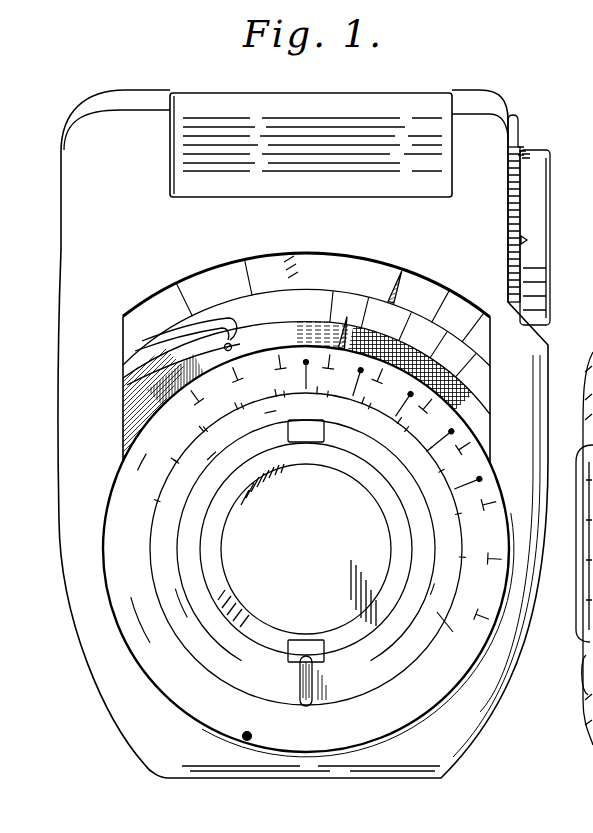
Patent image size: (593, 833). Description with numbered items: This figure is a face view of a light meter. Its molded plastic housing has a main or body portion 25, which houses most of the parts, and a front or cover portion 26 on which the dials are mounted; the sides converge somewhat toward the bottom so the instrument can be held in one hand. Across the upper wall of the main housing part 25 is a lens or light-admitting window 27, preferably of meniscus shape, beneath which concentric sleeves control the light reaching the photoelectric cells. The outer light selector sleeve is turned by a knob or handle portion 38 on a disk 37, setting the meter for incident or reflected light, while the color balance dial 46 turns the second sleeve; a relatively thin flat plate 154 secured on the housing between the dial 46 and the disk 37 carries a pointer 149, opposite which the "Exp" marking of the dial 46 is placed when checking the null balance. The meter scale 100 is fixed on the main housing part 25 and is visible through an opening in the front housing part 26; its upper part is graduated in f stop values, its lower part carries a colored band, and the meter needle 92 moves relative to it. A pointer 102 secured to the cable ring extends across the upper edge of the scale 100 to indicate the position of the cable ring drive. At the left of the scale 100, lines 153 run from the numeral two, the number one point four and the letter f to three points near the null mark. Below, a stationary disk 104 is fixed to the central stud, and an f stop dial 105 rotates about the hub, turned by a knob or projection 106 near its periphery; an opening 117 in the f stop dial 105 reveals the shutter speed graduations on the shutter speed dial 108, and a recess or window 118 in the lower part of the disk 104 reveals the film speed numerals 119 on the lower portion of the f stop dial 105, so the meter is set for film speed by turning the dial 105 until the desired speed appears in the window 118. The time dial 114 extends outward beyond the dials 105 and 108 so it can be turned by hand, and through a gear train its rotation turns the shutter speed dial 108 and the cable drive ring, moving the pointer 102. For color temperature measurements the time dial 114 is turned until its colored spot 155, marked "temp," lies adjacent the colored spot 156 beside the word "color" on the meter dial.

The main or body portion 25 is at (133, 92).
The front or cover portion 26 is at (93, 133).
The lens or light-admitting window 27 is at (270, 97).
The disk 37 is at (508, 181).
The knob or handle portion 38 is at (520, 115).
The dial 46 is at (539, 193).
The meter needle 92 is at (330, 322).
The meter scale 100 is at (123, 428).
The pointer 102 is at (393, 268).
The disk 104 is at (362, 530).
The f stop dial 105 is at (423, 649).
The knob or projection 106 is at (290, 717).
The shutter speed dial 108 is at (290, 444).
The time dial 114 is at (160, 674).
The opening 117 is at (319, 443).
The recess or window 118 is at (329, 640).
The film speed numerals 119 is at (300, 661).
The pointer 149 is at (525, 240).
The lines 153 is at (190, 305).
The thin flat plate 154 is at (522, 148).
The colored spot 155 is at (162, 734).
The colored spot 156 is at (123, 383).